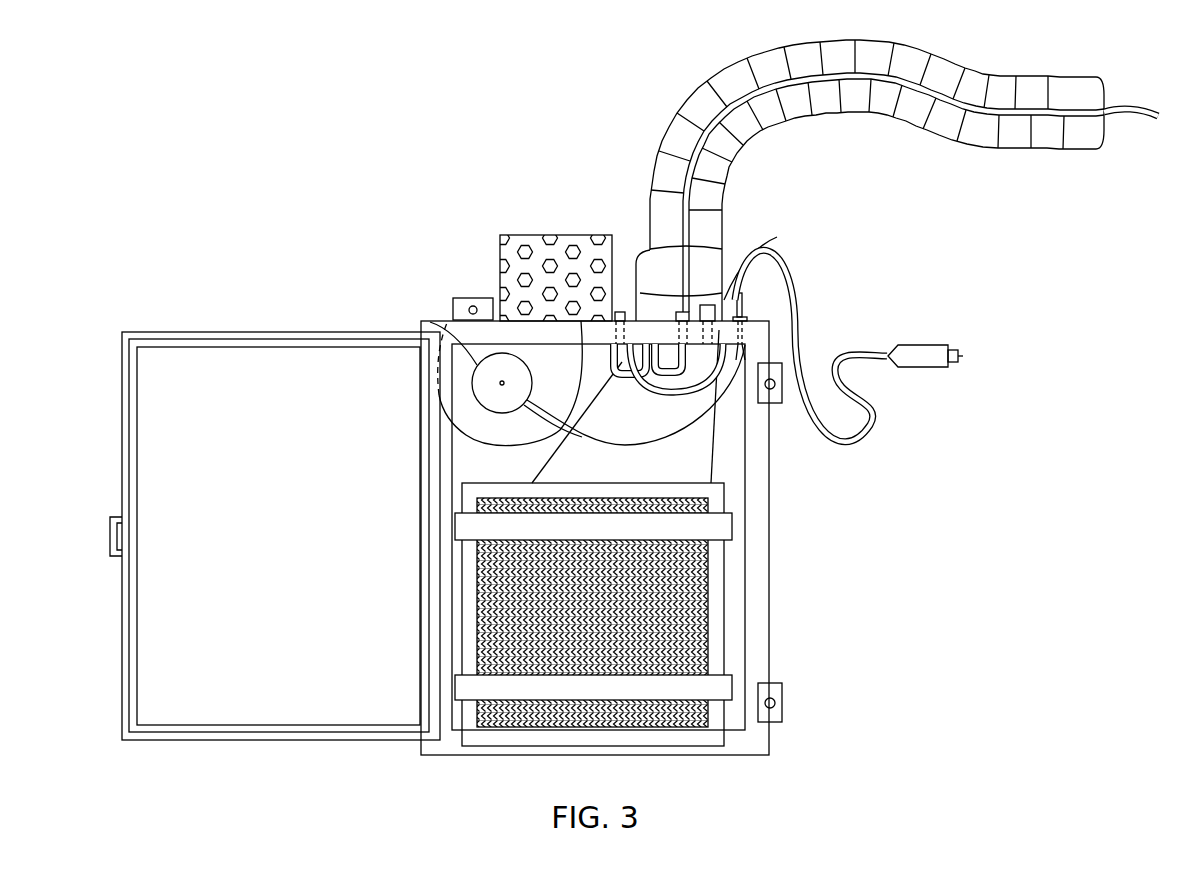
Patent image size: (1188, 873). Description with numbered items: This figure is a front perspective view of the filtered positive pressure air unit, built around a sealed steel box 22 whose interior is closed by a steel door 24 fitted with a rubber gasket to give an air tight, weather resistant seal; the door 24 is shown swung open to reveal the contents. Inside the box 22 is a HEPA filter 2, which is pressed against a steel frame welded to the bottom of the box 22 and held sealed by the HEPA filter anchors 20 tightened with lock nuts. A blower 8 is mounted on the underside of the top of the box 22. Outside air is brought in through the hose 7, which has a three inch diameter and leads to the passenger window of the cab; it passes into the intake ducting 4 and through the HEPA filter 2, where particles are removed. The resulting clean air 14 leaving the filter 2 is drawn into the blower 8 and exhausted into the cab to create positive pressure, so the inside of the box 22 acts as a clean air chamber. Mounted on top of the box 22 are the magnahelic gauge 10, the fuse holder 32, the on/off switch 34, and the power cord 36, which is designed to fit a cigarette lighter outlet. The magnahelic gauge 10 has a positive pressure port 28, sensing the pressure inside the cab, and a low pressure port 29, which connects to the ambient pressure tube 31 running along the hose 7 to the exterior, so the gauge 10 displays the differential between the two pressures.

The HEPA filter 2 is at (712, 638).
The intake ducting 4 is at (720, 440).
The hose 7 is at (977, 72).
The blower 8 is at (433, 322).
The magnahelic gauge 10 is at (651, 318).
The clean air 14 is at (559, 234).
The HEPA filter anchors 20 is at (732, 687).
The box 22 is at (420, 752).
The door 24 is at (312, 332).
The positive pressure port 28 is at (583, 331).
The low pressure port 29 is at (696, 315).
The ambient pressure tube 31 is at (1133, 102).
The fuse holder 32 is at (763, 260).
The on/off switch 34 is at (742, 296).
The power cord 36 is at (860, 353).